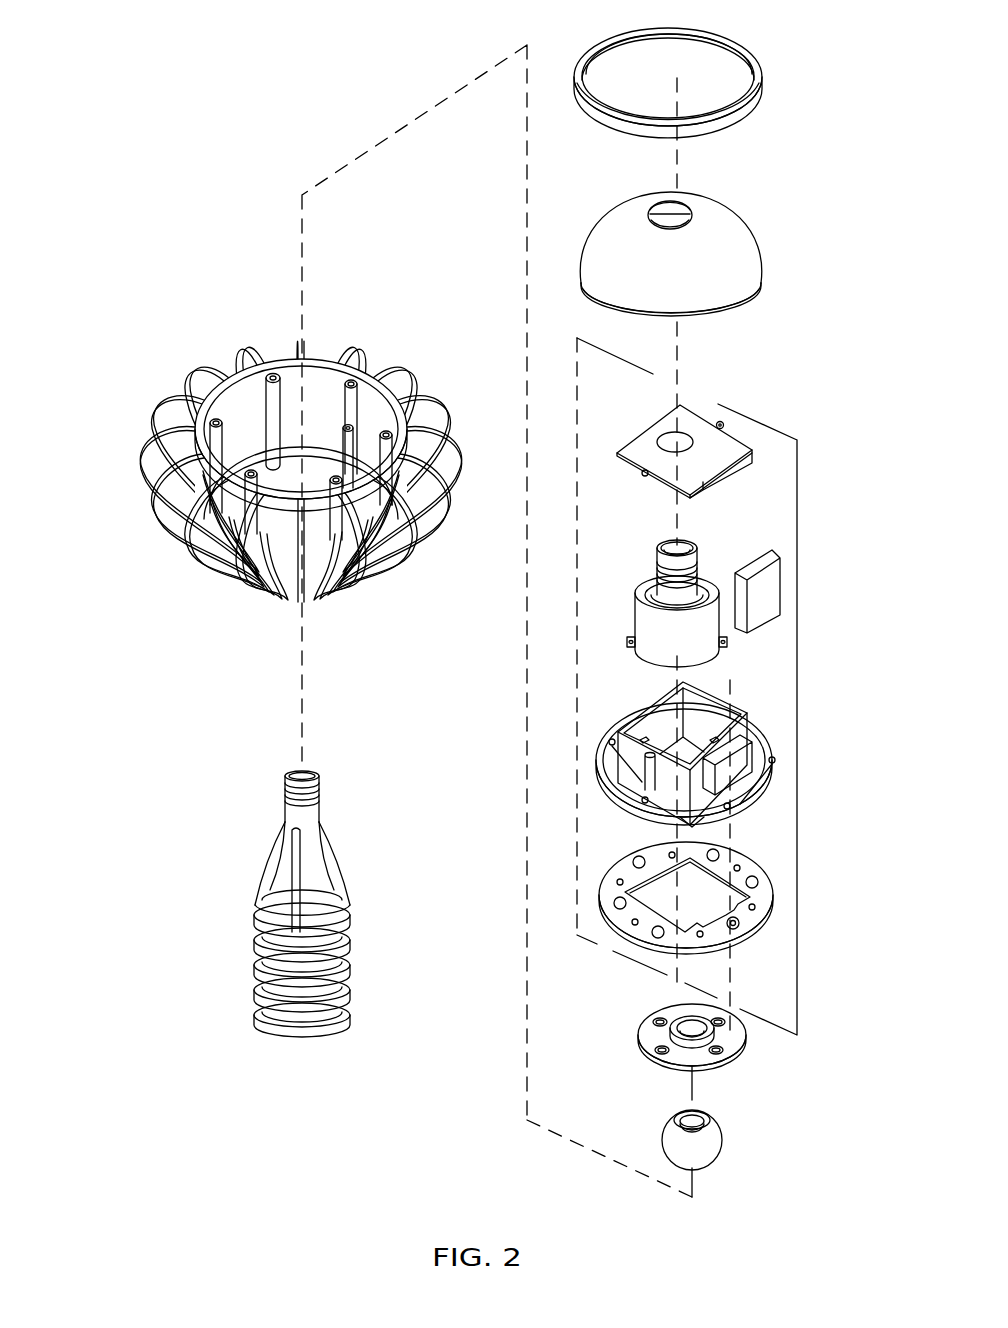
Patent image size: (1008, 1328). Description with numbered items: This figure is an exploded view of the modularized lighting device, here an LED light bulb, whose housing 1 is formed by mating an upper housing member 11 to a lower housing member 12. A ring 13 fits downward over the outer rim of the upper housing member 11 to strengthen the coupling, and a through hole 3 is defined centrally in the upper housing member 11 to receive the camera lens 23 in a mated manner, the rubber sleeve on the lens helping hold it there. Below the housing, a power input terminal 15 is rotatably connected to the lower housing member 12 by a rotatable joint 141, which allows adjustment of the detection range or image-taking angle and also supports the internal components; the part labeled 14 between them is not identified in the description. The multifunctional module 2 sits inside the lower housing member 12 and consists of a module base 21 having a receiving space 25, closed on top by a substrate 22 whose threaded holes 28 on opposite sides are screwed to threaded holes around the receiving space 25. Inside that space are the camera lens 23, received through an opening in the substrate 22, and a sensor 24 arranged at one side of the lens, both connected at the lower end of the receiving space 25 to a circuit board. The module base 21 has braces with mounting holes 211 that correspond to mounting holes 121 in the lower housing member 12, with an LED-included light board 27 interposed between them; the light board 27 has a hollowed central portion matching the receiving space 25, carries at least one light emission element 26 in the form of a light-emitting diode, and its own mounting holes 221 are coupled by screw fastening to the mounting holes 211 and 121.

The housing 1 is at (265, 467).
The lower housing member 12 is at (226, 566).
The mounting holes 121 is at (272, 376).
The connecting member 14 is at (262, 866).
The power input terminal 15 is at (258, 1020).
The rotatable joint 141 is at (722, 1130).
The ring 13 is at (759, 64).
The upper housing member 11 is at (698, 235).
The through hole 3 is at (680, 204).
The multifunctional module 2 is at (805, 1026).
The substrate 22 is at (703, 433).
The threaded holes 28 is at (722, 423).
The camera lens 23 is at (703, 580).
The sensor 24 is at (780, 578).
The receiving space 25 is at (687, 748).
The module base 21 is at (724, 746).
The mounting holes 211 is at (777, 749).
The light board 27 is at (728, 925).
The mounting holes 221 is at (754, 910).
The light emission element 26 is at (738, 928).